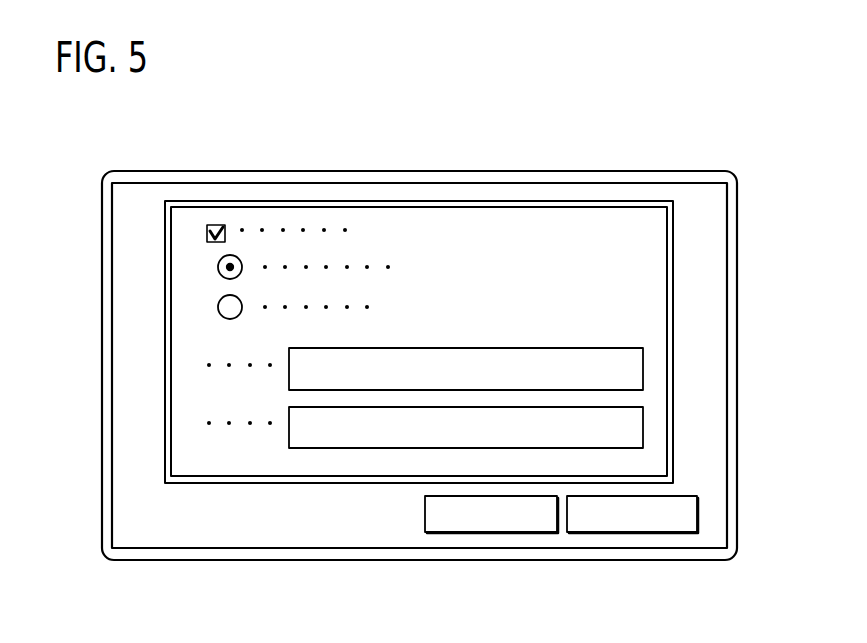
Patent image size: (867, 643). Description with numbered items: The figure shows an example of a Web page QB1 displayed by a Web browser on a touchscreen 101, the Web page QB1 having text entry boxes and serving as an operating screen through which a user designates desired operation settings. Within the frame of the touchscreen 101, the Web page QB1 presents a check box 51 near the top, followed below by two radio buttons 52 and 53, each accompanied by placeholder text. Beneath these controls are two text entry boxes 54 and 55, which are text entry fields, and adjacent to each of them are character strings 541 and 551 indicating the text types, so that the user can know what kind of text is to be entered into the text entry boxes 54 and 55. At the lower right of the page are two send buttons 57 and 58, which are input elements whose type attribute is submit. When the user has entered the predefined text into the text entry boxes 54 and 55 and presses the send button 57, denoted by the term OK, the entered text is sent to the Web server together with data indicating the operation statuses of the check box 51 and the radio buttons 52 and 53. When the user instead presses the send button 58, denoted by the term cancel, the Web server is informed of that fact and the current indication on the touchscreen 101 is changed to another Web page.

The touchscreen 101 is at (243, 171).
The Web page QB1 is at (403, 183).
The check box 51 is at (207, 239).
The radio button 52 is at (218, 267).
The radio button 53 is at (218, 307).
The text entry box 54 is at (636, 372).
The character string 541 is at (206, 373).
The text entry box 55 is at (632, 430).
The character string 551 is at (206, 438).
The send button 57 is at (520, 523).
The send button 58 is at (650, 523).